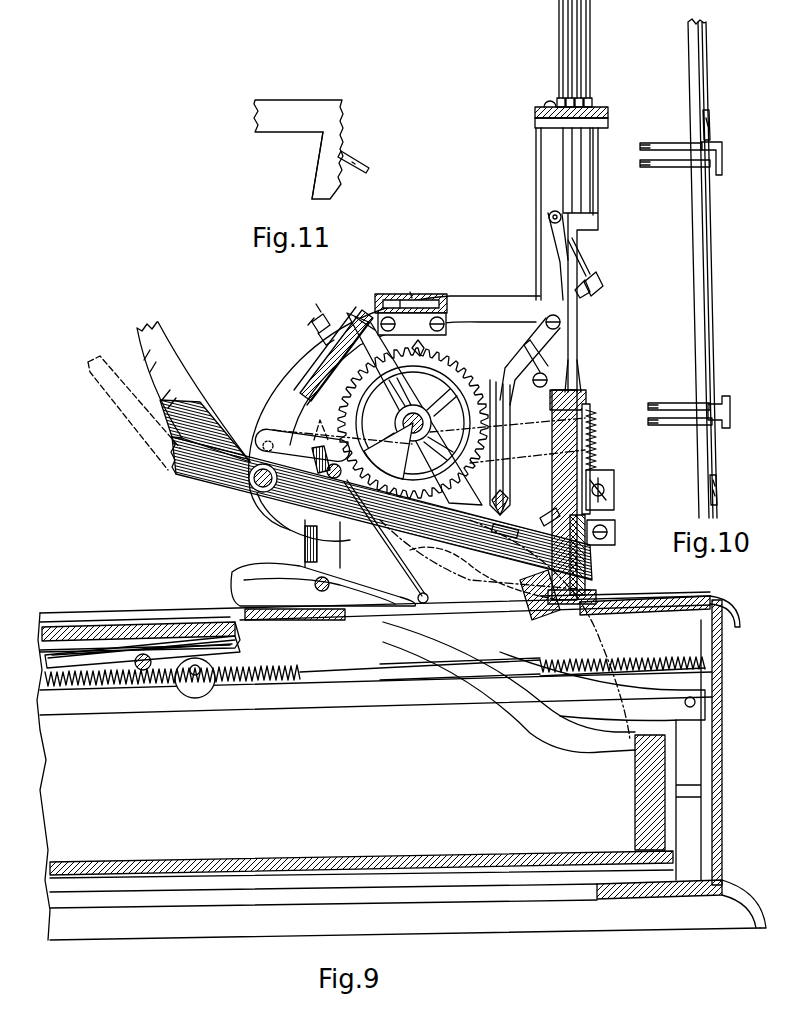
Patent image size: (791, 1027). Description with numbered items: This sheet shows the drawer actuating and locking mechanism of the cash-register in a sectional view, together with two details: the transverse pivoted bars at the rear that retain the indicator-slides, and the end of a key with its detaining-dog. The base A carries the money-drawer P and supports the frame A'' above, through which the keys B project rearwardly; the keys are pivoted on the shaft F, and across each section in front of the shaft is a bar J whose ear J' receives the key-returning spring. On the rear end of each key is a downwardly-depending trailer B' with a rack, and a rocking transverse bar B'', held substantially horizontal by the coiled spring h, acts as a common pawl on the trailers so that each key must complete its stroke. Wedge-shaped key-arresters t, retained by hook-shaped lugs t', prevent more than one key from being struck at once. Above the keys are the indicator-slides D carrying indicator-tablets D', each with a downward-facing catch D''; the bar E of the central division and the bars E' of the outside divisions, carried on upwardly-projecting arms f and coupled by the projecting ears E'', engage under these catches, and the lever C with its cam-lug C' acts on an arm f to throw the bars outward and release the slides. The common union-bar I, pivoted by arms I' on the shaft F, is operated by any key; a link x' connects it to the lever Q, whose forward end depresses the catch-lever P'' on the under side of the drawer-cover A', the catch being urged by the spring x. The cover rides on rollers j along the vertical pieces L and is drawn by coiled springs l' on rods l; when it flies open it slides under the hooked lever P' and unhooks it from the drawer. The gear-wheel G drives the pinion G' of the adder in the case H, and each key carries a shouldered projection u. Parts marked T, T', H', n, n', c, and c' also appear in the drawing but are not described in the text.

In FIG. 11, the keys B is at (298, 149).
In FIG. 9, the keys B is at (340, 451).
In FIG. 11, the trailer portion B' is at (332, 165).
In FIG. 9, the trailer portion B' is at (550, 605).
In FIG. 11, the transverse bar B'' is at (367, 164).
In FIG. 9, the transverse bar B'' is at (614, 532).
In FIG. 10, the bar E is at (713, 268).
In FIG. 9, the bar E is at (586, 299).
In FIG. 10, the bar E' is at (713, 270).
In FIG. 9, the bar E' is at (419, 419).
In FIG. 10, the projecting ears or arms E'' is at (725, 158).
In FIG. 9, the projecting ears or arms E'' is at (605, 282).
In FIG. 10, the upwardly-projecting arms f is at (668, 167).
In FIG. 9, the upwardly-projecting arms f is at (580, 258).
In FIG. 9, the indicator-slides D is at (571, 246).
In FIG. 9, the indicator-tablets D' is at (585, 53).
In FIG. 9, the catch D'' is at (588, 376).
In FIG. 9, the base A is at (641, 632).
In FIG. 9, the drawer-cover A' is at (140, 622).
In FIG. 9, the frame A'' is at (394, 413).
In FIG. 9, the shaft F is at (258, 492).
In FIG. 9, the pawl bar T is at (391, 428).
In FIG. 9, the arc T' is at (303, 517).
In FIG. 9, the case H is at (411, 304).
In FIG. 9, the slide H' is at (329, 356).
In FIG. 9, the screw n is at (400, 292).
In FIG. 9, the screw n' is at (327, 324).
In FIG. 9, the gear-wheel G is at (413, 422).
In FIG. 9, the pinion G' is at (433, 344).
In FIG. 9, the union-bar I is at (386, 449).
In FIG. 9, the arms I' is at (332, 544).
In FIG. 9, the transverse bar J is at (325, 445).
In FIG. 9, the ear J' is at (302, 435).
In FIG. 9, the lever Q is at (262, 570).
In FIG. 9, the spring x is at (141, 626).
In FIG. 9, the link x' is at (386, 541).
In FIG. 9, the projection u is at (505, 540).
In FIG. 9, the lever C is at (512, 447).
In FIG. 9, the cam-lug C' is at (515, 502).
In FIG. 9, the screw c is at (530, 370).
In FIG. 9, the screw c' is at (530, 360).
In FIG. 9, the key-arrester t is at (574, 497).
In FIG. 9, the hook-shaped lug t' is at (608, 493).
In FIG. 9, the coiled spring h is at (594, 440).
In FIG. 9, the money-drawer P is at (401, 768).
In FIG. 9, the lever P' is at (544, 687).
In FIG. 9, the catch-lever P'' is at (154, 657).
In FIG. 9, the rollers j is at (208, 690).
In FIG. 9, the vertical pieces L is at (292, 683).
In FIG. 9, the rods l is at (622, 654).
In FIG. 9, the coiled springs l' is at (542, 656).